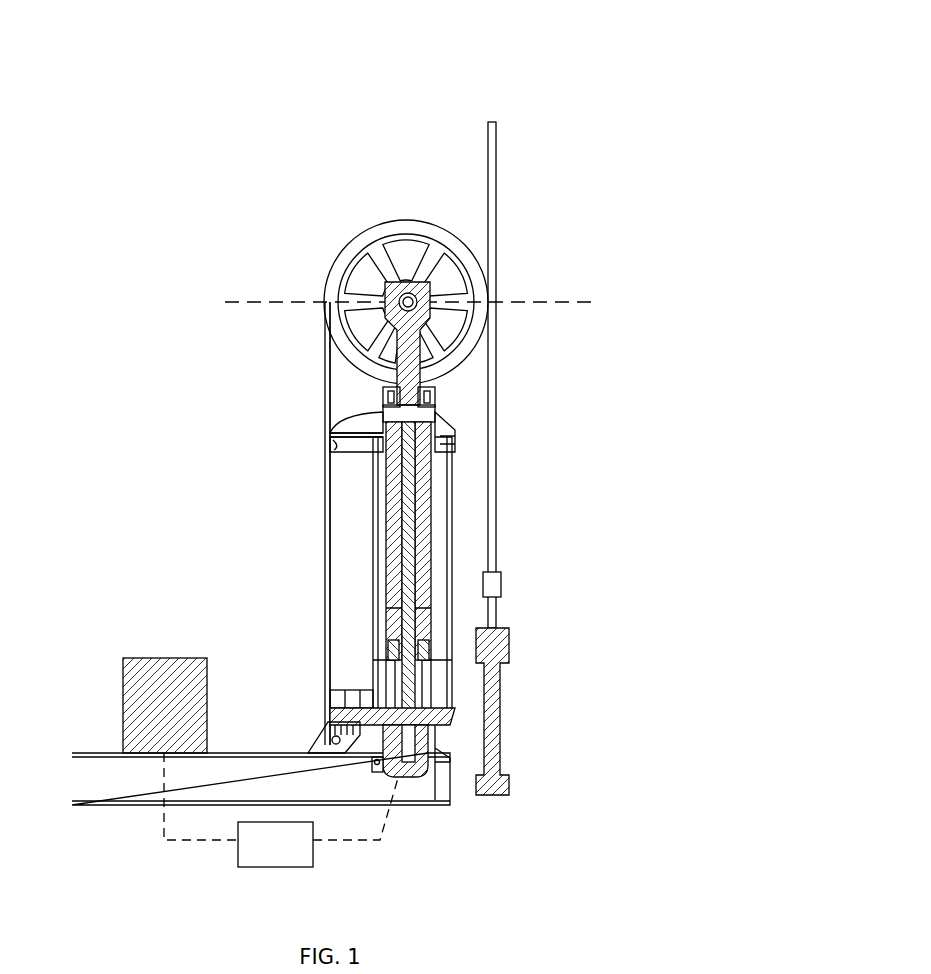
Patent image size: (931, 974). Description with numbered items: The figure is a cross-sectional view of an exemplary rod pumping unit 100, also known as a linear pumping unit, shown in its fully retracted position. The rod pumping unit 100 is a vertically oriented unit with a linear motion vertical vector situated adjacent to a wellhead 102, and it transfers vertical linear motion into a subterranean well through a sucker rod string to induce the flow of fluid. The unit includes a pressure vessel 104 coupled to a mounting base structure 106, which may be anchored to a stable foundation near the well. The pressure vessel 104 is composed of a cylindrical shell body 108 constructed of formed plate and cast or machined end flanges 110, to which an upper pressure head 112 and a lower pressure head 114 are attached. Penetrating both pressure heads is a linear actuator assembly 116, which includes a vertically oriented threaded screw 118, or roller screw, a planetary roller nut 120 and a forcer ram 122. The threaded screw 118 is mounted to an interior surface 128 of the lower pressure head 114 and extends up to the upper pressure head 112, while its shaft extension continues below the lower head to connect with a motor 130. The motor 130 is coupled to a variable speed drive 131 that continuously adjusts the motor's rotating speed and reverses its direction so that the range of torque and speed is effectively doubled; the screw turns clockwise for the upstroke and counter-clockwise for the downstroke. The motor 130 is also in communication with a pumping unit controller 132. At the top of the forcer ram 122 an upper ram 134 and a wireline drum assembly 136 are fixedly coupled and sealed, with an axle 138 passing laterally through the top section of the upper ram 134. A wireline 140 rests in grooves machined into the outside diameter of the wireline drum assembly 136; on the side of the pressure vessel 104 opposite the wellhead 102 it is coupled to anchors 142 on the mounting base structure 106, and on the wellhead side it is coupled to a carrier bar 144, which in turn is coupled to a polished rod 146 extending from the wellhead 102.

The rod pumping unit 100 is at (417, 91).
The wellhead 102 is at (500, 710).
The pressure vessel 104 is at (325, 493).
The mounting base structure 106 is at (123, 790).
The shell body 108 is at (452, 488).
The end flanges 110 is at (330, 440).
The upper pressure head 112 is at (358, 420).
The lower pressure head 114 is at (325, 712).
The linear actuator assembly 116 is at (378, 622).
The threaded screw 118 is at (378, 585).
The planetary roller nut 120 is at (431, 615).
The forcer ram 122 is at (435, 648).
The interior surface 128 is at (338, 550).
The motor 130 is at (396, 780).
The variable speed drive 131 is at (275, 868).
The pumping unit controller 132 is at (123, 705).
The upper ram 134 is at (397, 325).
The wireline drum assembly 136 is at (380, 222).
The axle 138 is at (400, 298).
The wireline 140 is at (325, 365).
The anchors 142 is at (336, 758).
The carrier bar 144 is at (502, 582).
The polished rod 146 is at (496, 173).